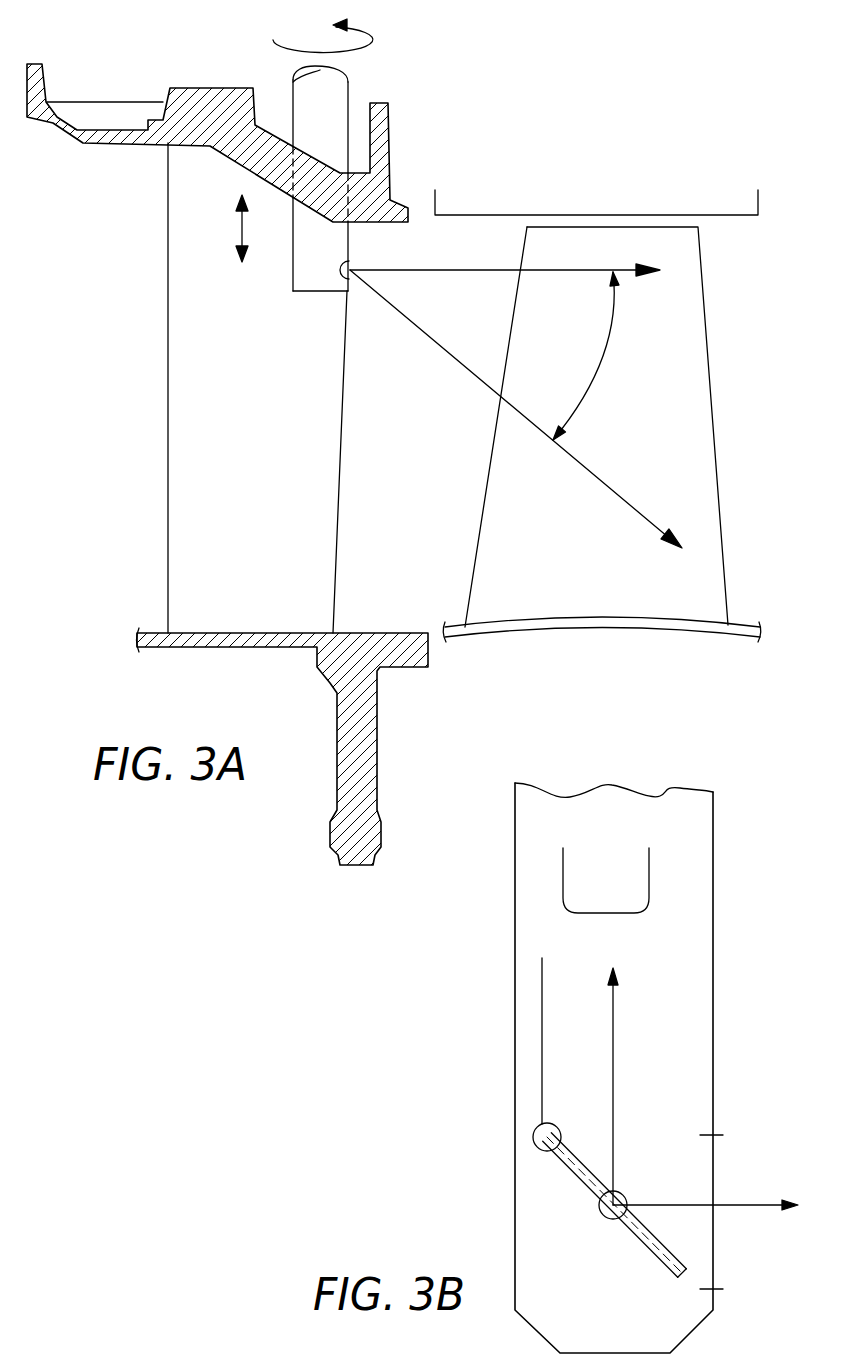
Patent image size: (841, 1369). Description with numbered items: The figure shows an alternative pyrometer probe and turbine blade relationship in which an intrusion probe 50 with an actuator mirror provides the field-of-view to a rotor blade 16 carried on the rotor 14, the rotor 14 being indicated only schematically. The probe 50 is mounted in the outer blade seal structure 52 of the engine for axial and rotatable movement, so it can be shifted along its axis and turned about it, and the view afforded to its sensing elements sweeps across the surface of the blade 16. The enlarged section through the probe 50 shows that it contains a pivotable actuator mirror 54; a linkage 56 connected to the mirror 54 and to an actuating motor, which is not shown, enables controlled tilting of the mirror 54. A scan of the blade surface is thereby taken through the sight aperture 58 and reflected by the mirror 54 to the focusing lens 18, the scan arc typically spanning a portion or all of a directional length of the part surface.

In FIG. 3A, the rotor hub 14 is at (308, 269).
In FIG. 3A, the rotor blade 16 is at (675, 394).
In FIG. 3B, the focusing lens 18 is at (627, 875).
In FIG. 3A, the probe 50 is at (356, 94).
In FIG. 3B, the probe 50 is at (724, 1010).
In FIG. 3A, the outer blade seal structure 52 is at (203, 76).
In FIG. 3B, the actuator mirror 54 is at (690, 1265).
In FIG. 3B, the linkage 56 is at (542, 1077).
In FIG. 3A, the sight aperture 58 is at (354, 268).
In FIG. 3B, the sight aperture 58 is at (715, 1170).